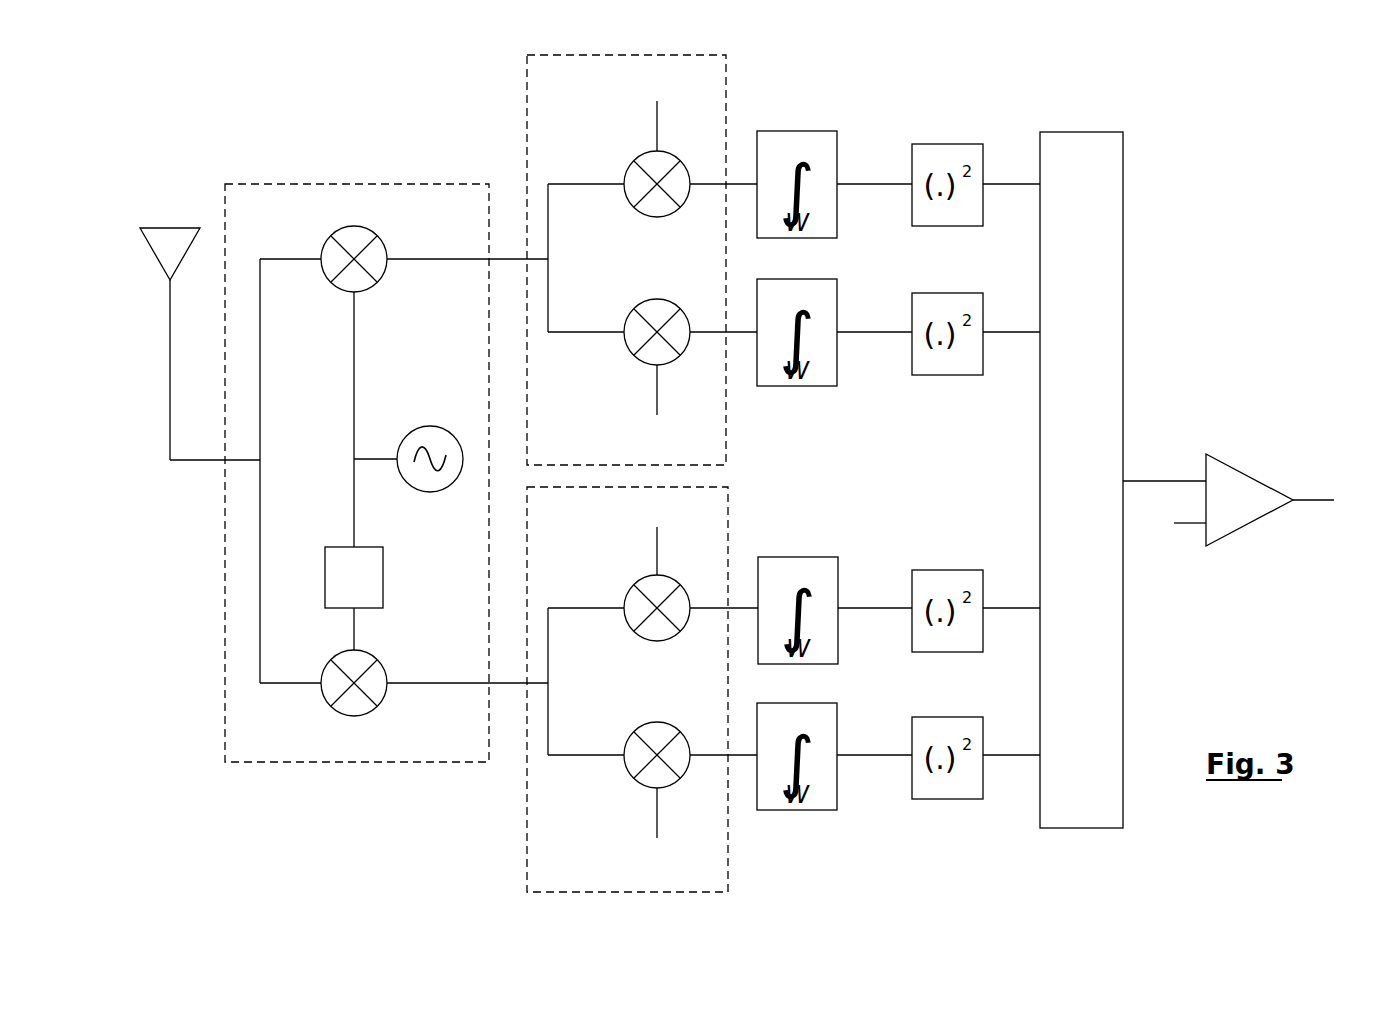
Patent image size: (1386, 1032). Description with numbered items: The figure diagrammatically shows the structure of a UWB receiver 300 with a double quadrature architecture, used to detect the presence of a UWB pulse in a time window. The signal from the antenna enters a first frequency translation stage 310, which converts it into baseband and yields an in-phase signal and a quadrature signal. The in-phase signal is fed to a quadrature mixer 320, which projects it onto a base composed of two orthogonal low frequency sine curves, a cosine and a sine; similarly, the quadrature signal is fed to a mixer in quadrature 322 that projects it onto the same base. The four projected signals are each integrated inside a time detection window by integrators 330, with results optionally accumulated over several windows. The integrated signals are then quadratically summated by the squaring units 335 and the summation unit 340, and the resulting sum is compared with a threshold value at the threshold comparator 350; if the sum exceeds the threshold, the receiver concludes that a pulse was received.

The UWB receiver 300 is at (218, 155).
The first frequency translation stage 310 is at (320, 184).
The quadrature mixer 320 is at (527, 112).
The mixer in quadrature 322 is at (528, 850).
The integrators 330 is at (786, 131).
The squaring units 335 is at (940, 144).
The summation unit 340 is at (1072, 132).
The threshold comparator 350 is at (1222, 455).